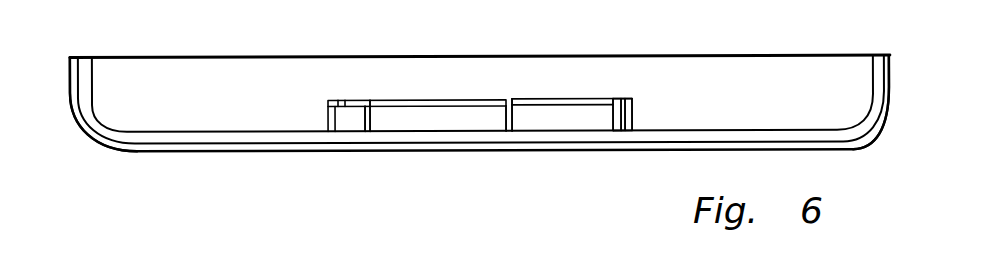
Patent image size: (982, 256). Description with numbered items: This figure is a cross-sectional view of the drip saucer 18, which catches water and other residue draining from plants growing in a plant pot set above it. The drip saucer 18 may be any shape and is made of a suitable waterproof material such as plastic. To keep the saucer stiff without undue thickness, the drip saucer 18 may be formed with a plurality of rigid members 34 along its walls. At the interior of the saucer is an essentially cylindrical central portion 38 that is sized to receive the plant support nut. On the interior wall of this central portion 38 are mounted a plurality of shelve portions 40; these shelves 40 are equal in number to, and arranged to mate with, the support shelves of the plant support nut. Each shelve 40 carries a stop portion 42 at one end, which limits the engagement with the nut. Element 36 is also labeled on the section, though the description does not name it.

The drip saucer 18 is at (790, 88).
The rigid members 34 is at (302, 131).
The right end wall 36 is at (888, 56).
The central portion 38 is at (632, 115).
The shelve portions 40 is at (468, 100).
The stop portion 42 is at (364, 111).